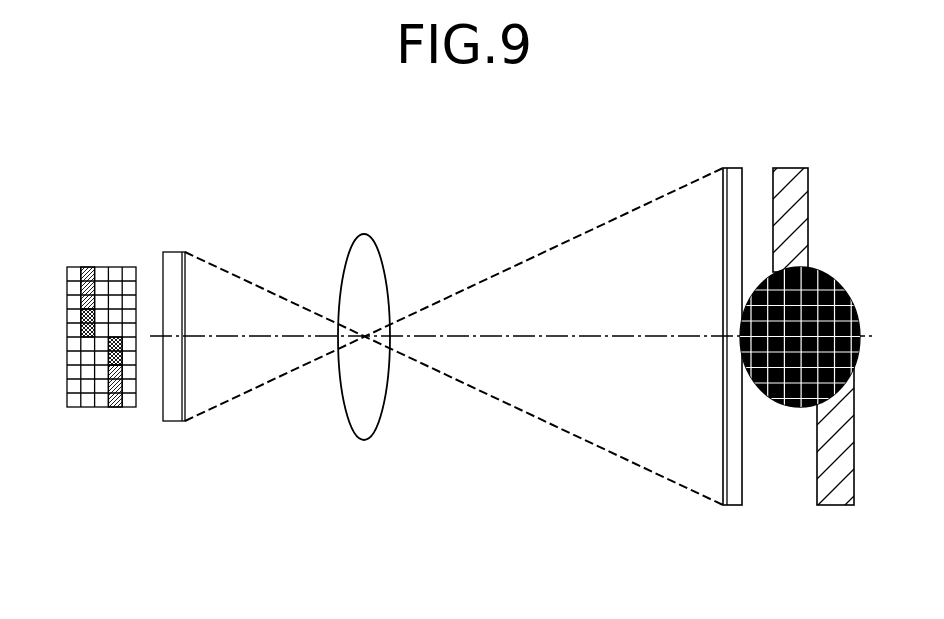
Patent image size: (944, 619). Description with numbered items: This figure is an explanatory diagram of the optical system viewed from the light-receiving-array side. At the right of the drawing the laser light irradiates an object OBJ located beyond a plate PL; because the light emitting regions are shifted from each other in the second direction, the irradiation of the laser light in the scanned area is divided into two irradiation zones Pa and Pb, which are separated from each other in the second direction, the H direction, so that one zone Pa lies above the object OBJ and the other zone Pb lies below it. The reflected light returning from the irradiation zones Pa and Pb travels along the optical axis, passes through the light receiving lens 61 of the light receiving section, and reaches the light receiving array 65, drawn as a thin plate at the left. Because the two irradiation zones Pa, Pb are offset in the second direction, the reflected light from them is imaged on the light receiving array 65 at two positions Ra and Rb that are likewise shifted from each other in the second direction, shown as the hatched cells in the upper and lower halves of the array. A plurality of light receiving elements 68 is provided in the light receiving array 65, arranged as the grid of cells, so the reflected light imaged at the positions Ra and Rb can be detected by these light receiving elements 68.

The light receiving lens 61 is at (362, 235).
The light receiving array 65 is at (175, 254).
The light receiving elements 68 is at (99, 406).
The position Ra is at (85, 266).
The position Rb is at (113, 408).
The plate PL is at (730, 168).
The irradiation zone Pa is at (788, 168).
The irradiation zone Pb is at (833, 506).
The object OBJ is at (826, 270).